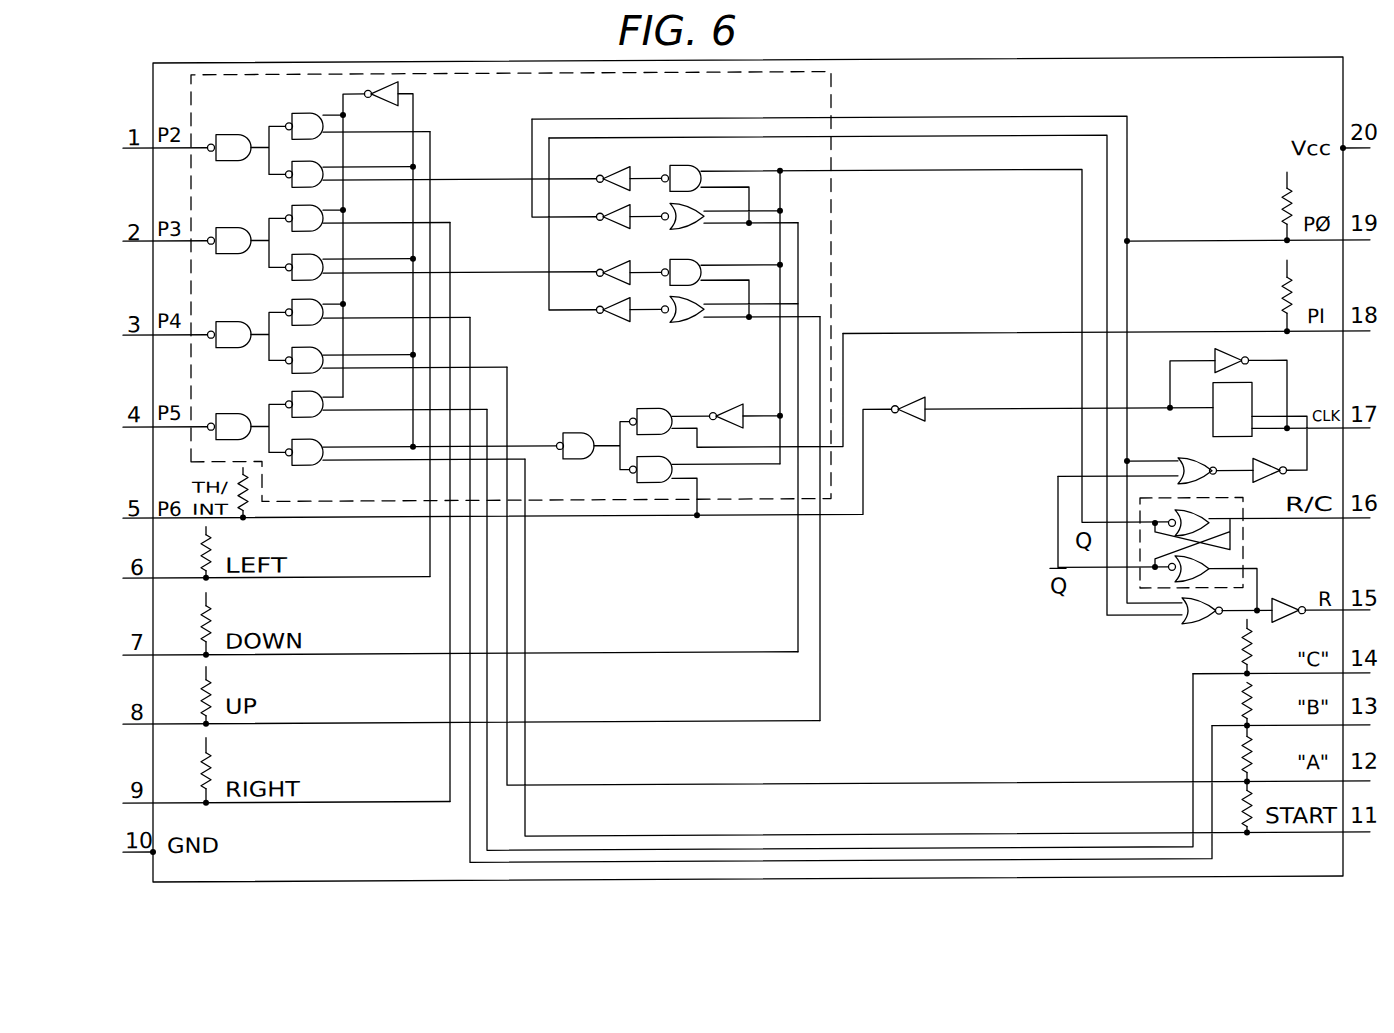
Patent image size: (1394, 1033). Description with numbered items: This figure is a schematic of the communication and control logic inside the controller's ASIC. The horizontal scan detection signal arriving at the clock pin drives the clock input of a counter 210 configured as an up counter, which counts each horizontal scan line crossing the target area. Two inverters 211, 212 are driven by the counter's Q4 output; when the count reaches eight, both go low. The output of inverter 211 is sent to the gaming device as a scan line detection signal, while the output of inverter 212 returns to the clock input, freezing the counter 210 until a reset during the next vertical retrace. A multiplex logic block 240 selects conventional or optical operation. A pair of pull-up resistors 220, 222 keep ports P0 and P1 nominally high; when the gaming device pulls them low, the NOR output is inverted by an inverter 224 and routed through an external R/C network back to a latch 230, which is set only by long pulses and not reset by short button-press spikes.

The multiplex logic block 240 is at (832, 84).
The inverter 212 is at (908, 400).
The inverter 211 is at (1216, 353).
The counter 210 is at (1213, 432).
The latch 230 is at (1243, 541).
The inverter 224 is at (1298, 591).
The pull-up resistor 220 is at (1280, 204).
The pull-up resistor 222 is at (1278, 295).